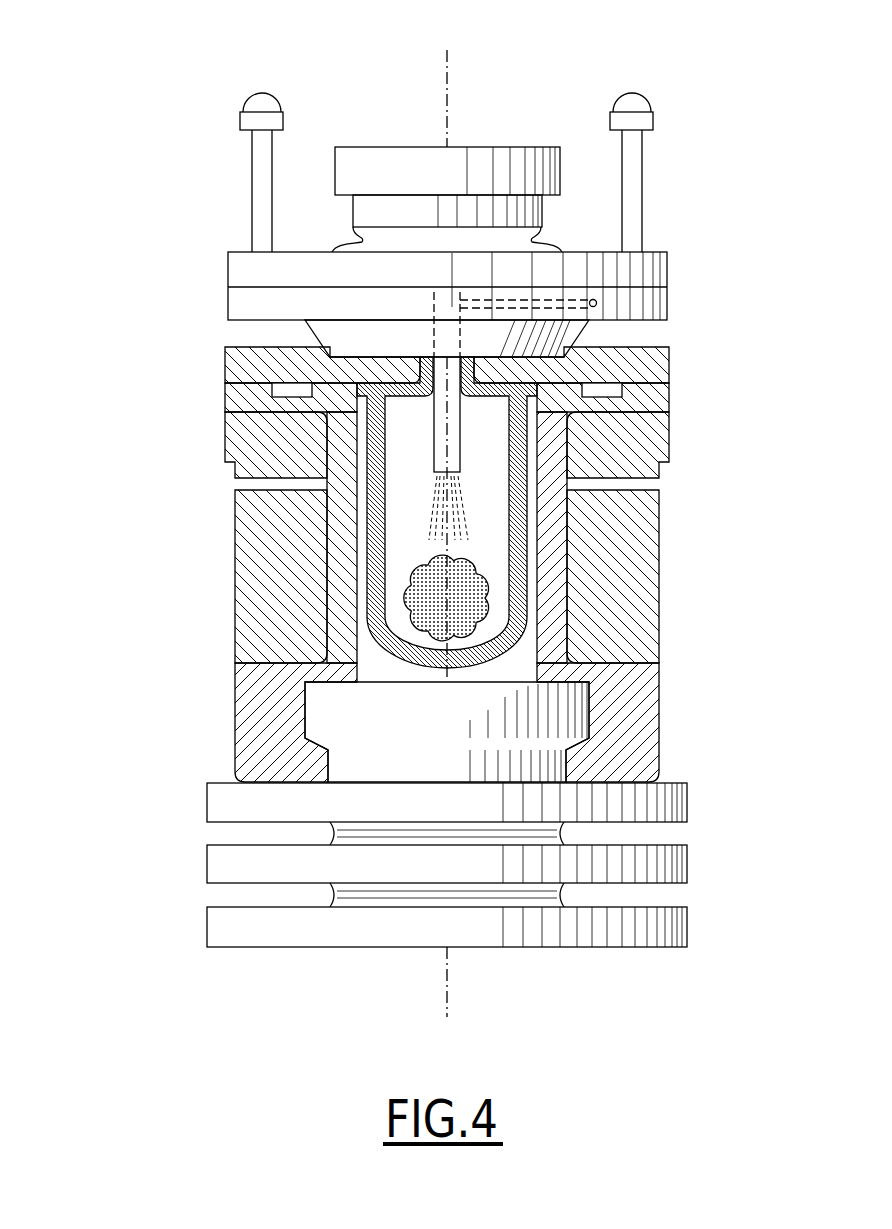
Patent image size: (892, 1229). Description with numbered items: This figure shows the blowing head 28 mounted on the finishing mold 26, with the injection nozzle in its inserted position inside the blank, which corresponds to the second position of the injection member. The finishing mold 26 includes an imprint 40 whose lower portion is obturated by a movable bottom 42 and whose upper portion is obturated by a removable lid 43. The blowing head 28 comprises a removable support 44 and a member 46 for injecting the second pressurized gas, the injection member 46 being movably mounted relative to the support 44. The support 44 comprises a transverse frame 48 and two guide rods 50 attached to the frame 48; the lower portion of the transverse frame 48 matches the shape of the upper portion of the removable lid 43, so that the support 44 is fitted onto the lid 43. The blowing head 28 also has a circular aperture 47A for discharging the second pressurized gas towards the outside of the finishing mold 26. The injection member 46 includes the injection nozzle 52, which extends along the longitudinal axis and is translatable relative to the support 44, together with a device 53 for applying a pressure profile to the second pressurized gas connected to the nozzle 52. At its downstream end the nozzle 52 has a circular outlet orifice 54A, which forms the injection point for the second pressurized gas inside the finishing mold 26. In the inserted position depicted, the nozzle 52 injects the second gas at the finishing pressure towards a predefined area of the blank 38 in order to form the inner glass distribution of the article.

The blowing head 28 is at (425, 534).
The injection member 46 is at (474, 143).
The device for applying a pressure profile 53 is at (502, 157).
The removable support 44 is at (419, 281).
The transverse frame 48 is at (640, 307).
The discharge aperture 47A is at (593, 299).
The guide rods 50 is at (262, 192).
The removable lid 43 is at (253, 367).
The finishing mold 26 is at (196, 445).
The imprint 40 is at (453, 719).
The movable bottom 42 is at (448, 760).
The blank 38 is at (515, 528).
The injection nozzle 52 is at (424, 448).
The outlet orifice 54A is at (458, 476).